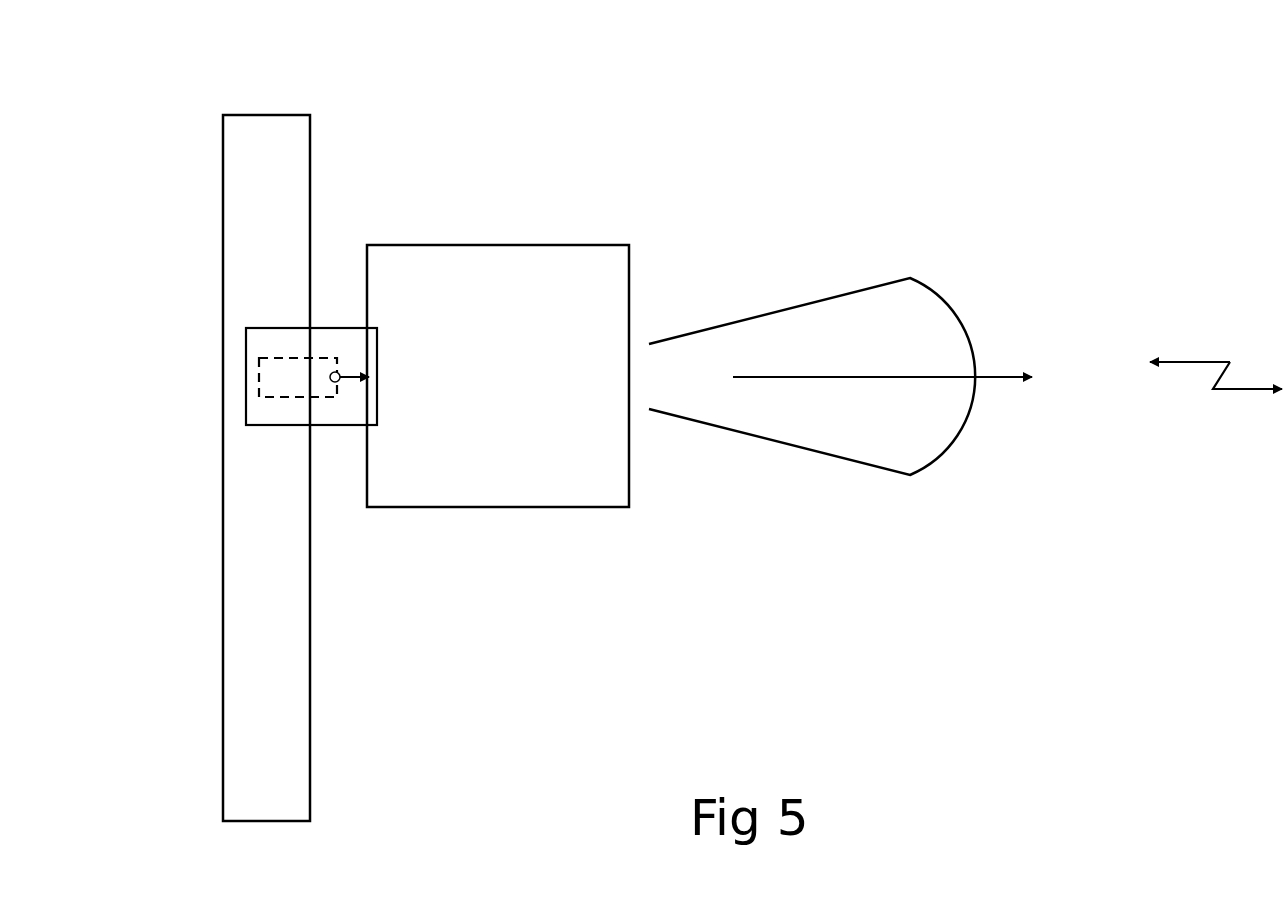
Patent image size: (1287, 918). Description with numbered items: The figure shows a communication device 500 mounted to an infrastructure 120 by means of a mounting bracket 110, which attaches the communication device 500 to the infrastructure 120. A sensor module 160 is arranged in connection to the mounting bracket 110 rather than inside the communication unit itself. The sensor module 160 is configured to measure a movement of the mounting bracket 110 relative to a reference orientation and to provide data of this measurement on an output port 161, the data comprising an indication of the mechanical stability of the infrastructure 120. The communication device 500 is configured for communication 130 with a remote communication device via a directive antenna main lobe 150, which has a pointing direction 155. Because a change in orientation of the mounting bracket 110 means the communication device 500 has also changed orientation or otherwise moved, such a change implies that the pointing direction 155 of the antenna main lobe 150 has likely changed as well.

The mounting bracket 110 is at (246, 400).
The infrastructure 120 is at (266, 115).
The communication 130 is at (1216, 357).
The antenna main lobe 150 is at (943, 268).
The pointing direction 155 is at (904, 355).
The sensor module 160 is at (259, 367).
The output port 161 is at (340, 383).
The communication device 500 is at (407, 557).